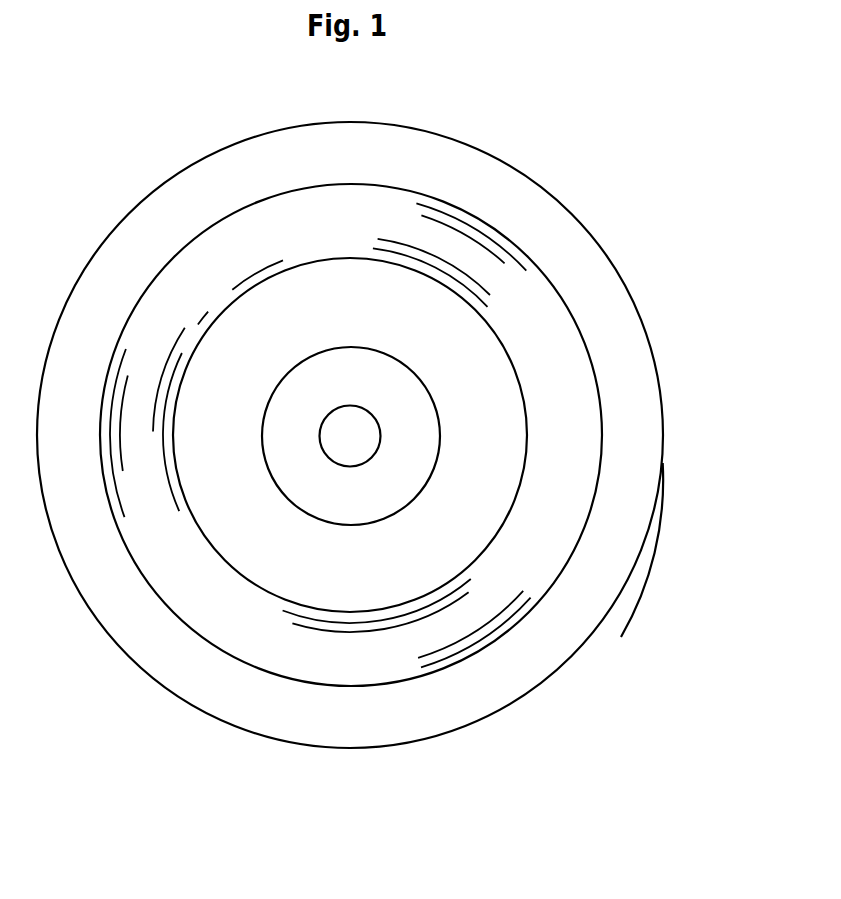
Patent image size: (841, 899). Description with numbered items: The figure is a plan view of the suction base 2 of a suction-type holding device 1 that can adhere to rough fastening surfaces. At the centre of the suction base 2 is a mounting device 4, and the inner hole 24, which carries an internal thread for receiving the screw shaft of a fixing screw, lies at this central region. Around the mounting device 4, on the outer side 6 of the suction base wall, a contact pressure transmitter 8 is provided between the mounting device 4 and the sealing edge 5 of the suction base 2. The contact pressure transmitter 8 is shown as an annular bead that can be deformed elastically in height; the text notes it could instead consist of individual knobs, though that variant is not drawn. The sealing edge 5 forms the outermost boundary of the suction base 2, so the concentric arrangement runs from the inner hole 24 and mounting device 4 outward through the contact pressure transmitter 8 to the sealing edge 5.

The suction-type holding device 1 is at (623, 184).
The suction base 2 is at (662, 463).
The mounting device 4 is at (442, 439).
The sealing edge 5 is at (657, 492).
The outer side 6 is at (623, 370).
The contact pressure transmitter 8 is at (352, 435).
The inner hole 24 is at (338, 433).